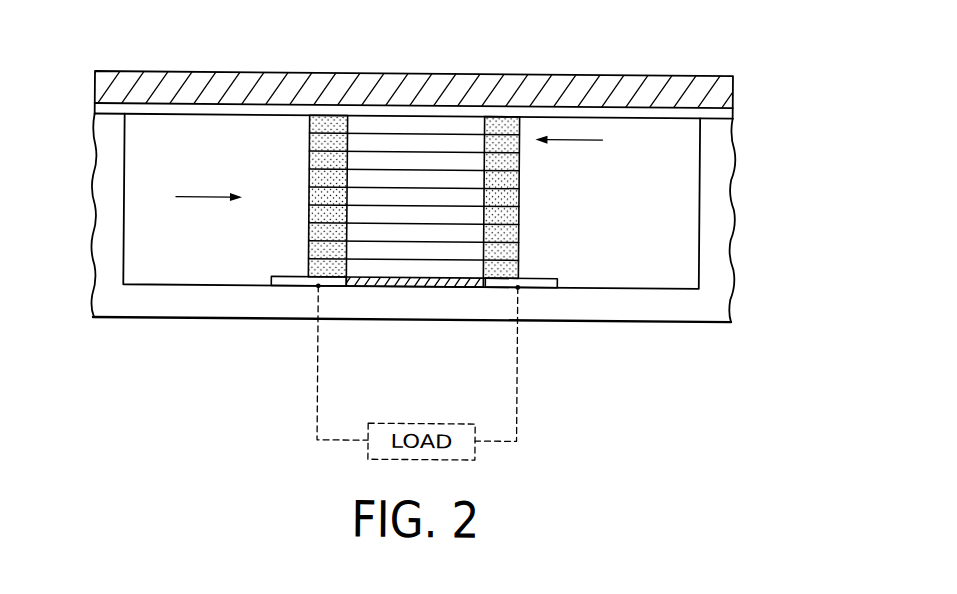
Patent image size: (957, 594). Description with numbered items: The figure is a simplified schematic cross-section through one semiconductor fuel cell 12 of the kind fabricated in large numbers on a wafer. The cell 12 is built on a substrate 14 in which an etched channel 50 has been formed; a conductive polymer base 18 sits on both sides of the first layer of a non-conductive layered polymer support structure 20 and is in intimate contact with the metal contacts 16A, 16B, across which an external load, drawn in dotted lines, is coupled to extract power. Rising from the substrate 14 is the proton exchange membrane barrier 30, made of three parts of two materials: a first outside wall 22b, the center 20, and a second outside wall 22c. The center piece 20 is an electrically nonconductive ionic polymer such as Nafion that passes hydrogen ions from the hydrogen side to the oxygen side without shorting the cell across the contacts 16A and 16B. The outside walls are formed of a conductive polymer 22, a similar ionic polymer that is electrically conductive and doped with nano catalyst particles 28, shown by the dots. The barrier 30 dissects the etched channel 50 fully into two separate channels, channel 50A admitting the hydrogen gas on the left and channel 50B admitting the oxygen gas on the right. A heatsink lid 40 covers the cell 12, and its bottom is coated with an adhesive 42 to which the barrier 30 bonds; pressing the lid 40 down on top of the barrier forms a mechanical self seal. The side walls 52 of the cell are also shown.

The fuel cell 12 is at (712, 216).
The substrate 14 is at (654, 310).
The contact 16A is at (292, 275).
The contact 16B is at (544, 278).
The conductive polymer base 18 is at (522, 265).
The non-conductive layered polymer support structure 20 is at (473, 180).
The conductive polymer 22 is at (311, 165).
The first outside wall 22b is at (315, 114).
The second outside wall 22c is at (516, 114).
The catalyst particles 28 is at (309, 273).
The PEM barrier 30 is at (522, 82).
The heatsink lid 40 is at (147, 78).
The adhesive 42 is at (597, 108).
The etched channel 50 is at (678, 133).
The etched channel for hydrogen 50A is at (193, 266).
The etched channel for oxygen 50B is at (657, 204).
The side walls 52 is at (99, 180).